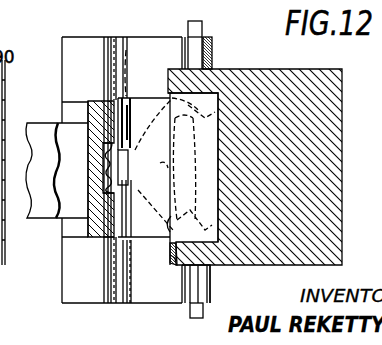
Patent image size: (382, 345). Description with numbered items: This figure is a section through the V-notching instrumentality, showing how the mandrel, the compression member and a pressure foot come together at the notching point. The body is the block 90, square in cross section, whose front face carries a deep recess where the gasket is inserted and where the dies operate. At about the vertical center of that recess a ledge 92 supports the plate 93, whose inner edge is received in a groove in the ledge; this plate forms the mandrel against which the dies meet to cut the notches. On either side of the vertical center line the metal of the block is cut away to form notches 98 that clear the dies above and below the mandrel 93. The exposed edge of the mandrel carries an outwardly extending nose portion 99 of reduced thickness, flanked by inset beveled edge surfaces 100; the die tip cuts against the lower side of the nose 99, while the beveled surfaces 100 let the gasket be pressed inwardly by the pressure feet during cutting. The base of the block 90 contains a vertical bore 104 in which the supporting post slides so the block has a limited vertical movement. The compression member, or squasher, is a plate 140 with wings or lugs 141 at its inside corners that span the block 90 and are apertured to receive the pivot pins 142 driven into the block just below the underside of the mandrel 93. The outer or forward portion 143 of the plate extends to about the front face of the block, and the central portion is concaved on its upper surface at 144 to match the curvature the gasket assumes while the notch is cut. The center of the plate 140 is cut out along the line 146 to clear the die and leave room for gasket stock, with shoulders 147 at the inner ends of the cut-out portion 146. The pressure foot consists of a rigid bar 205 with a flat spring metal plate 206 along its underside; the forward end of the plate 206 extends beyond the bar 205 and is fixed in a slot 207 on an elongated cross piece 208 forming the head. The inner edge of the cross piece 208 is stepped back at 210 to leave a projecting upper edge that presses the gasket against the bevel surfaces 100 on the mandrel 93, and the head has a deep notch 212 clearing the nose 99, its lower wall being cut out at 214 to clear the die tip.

The block 90 is at (343, 110).
The ledge 92 is at (177, 170).
The plate (mandrel) 93 is at (160, 78).
The notches 98 is at (200, 212).
The nose portion 99 is at (124, 165).
The beveled edge surfaces 100 is at (128, 80).
The vertical bore 104 is at (245, 69).
The plate (compression member) 140 is at (82, 304).
The wings or lugs 141 is at (204, 37).
The pivot pins 142 is at (194, 22).
The outer or forward portion 143 is at (84, 40).
The concavity 144 is at (145, 44).
The cut-out portion 146 is at (155, 239).
The shoulders 147 is at (209, 62).
The rigid bar 205 is at (37, 121).
The flat spring metal plate 206 is at (57, 222).
The slot 207 is at (84, 104).
The cross piece 208 is at (110, 252).
The stepped back inner edge 210 is at (110, 270).
The deep notch 212 is at (106, 156).
The cut-out of notch lower wall 214 is at (108, 178).